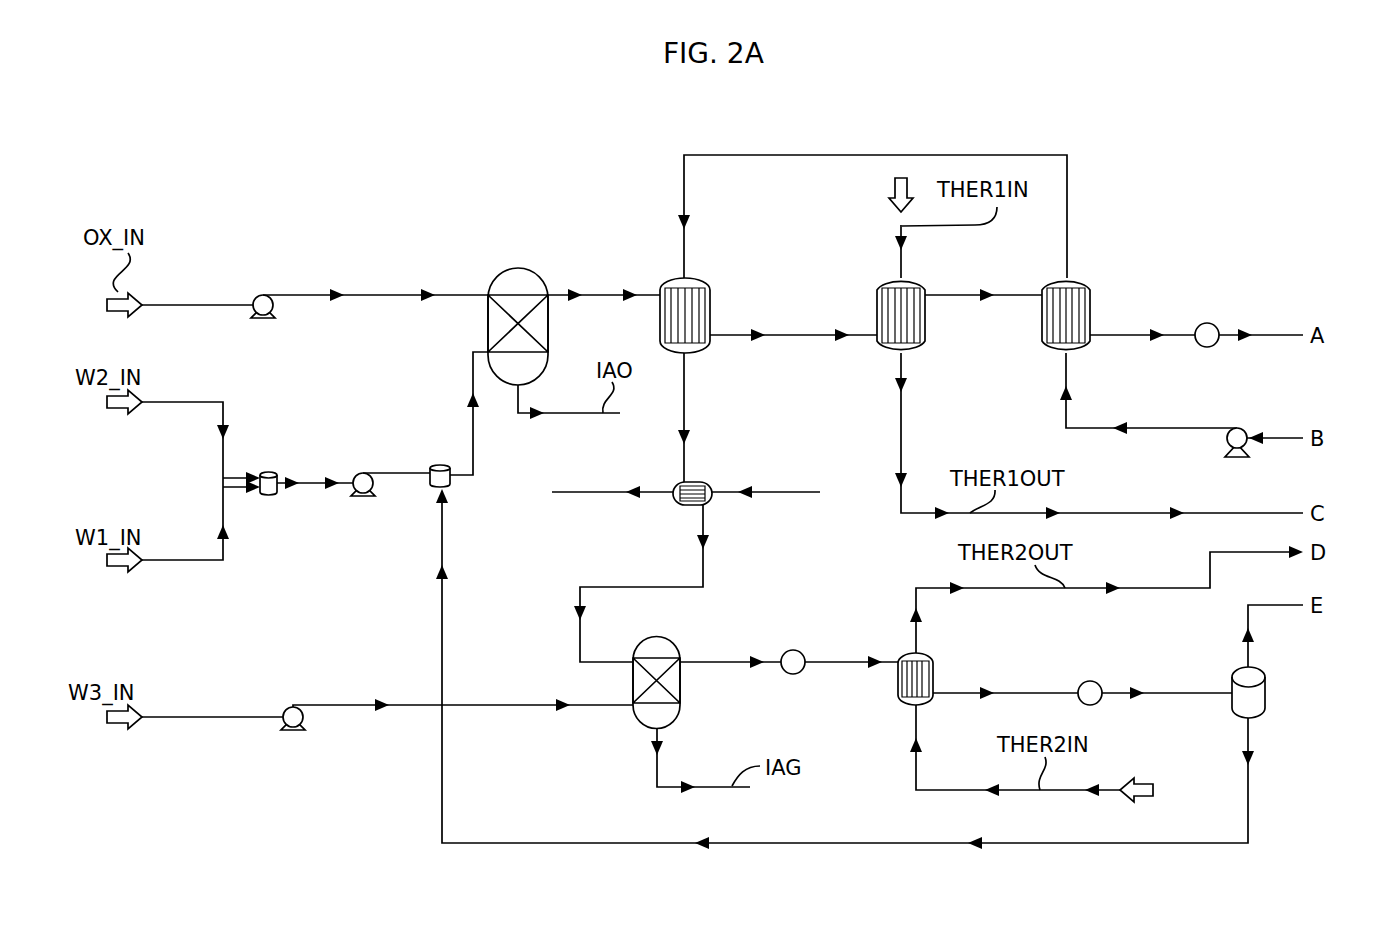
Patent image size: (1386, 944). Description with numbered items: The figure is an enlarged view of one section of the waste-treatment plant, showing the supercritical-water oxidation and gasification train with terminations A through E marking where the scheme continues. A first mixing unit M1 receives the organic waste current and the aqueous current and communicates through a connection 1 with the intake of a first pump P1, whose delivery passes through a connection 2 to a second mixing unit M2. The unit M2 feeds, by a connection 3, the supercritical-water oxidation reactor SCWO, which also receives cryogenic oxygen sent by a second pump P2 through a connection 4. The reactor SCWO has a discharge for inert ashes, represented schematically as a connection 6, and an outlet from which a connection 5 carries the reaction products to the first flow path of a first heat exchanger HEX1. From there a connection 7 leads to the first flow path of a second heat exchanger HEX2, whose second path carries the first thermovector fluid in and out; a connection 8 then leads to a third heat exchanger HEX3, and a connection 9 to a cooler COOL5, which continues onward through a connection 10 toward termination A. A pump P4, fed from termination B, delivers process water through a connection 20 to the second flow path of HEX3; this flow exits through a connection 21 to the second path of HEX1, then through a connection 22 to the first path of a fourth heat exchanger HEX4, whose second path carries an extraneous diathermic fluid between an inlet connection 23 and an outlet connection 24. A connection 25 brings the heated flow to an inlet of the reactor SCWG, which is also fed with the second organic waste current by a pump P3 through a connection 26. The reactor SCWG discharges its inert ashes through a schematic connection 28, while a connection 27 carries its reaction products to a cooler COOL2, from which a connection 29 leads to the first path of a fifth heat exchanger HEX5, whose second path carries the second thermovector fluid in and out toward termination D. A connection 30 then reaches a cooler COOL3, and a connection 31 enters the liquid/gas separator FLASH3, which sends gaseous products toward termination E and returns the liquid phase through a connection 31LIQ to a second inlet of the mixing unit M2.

The connection 1 is at (302, 483).
The connection 2 is at (385, 473).
The connection 3 is at (473, 433).
The connection 4 is at (378, 295).
The connection 5 is at (605, 295).
The connection 6 is at (580, 413).
The connection 7 is at (812, 335).
The connection 8 is at (1020, 297).
The connection 9 is at (1130, 335).
The connection 10 is at (1290, 337).
The connection 20 is at (1188, 428).
The connection 21 is at (815, 158).
The connection 22 is at (688, 395).
The inlet connection 23 is at (790, 492).
The outlet connection 24 is at (590, 493).
The connection 25 is at (633, 588).
The connection 26 is at (475, 705).
The connection 27 is at (712, 665).
The connection 28 is at (718, 792).
The connection 29 is at (848, 665).
The connection 30 is at (1010, 692).
The connection 31 is at (1170, 693).
The connection 31LIQ is at (845, 843).
The first pump P1 is at (365, 493).
The second pump P2 is at (262, 300).
The pump P3 is at (290, 727).
The pump P4 is at (1235, 430).
The first mixing unit M1 is at (270, 497).
The second mixing unit M2 is at (452, 485).
The supercritical-water oxidation reactor SCWO is at (518, 272).
The reactor SCWG is at (648, 715).
The first heat exchanger HEX1 is at (690, 298).
The second heat exchanger HEX2 is at (880, 340).
The third heat exchanger HEX3 is at (1078, 298).
The fourth heat exchanger HEX4 is at (690, 500).
The fifth heat exchanger HEX5 is at (898, 695).
The cooler COOL2 is at (790, 660).
The cooler COOL3 is at (1090, 690).
The cooler COOL5 is at (1207, 325).
The third liquid/gas separator FLASH3 is at (1250, 710).